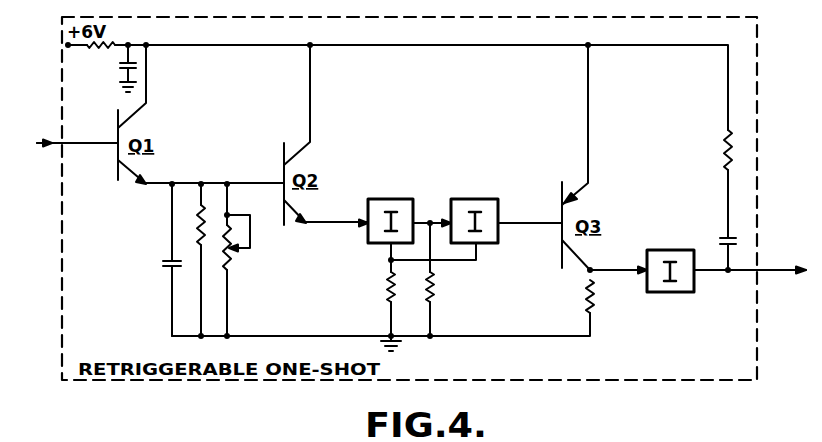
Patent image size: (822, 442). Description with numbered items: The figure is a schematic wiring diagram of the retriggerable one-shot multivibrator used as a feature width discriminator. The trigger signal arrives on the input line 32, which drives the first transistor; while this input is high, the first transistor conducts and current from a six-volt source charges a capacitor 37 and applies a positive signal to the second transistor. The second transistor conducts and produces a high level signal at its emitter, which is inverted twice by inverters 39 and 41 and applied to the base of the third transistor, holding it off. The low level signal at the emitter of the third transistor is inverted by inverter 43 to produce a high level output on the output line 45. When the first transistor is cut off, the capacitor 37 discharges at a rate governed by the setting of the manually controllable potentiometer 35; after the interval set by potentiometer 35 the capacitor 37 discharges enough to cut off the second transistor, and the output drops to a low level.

The input trigger line 32 is at (58, 146).
The potentiometer 35 is at (231, 263).
The capacitor 37 is at (163, 263).
The inverter 39 is at (385, 199).
The inverter 41 is at (469, 199).
The inverter 43 is at (666, 250).
The output line 45 is at (768, 270).